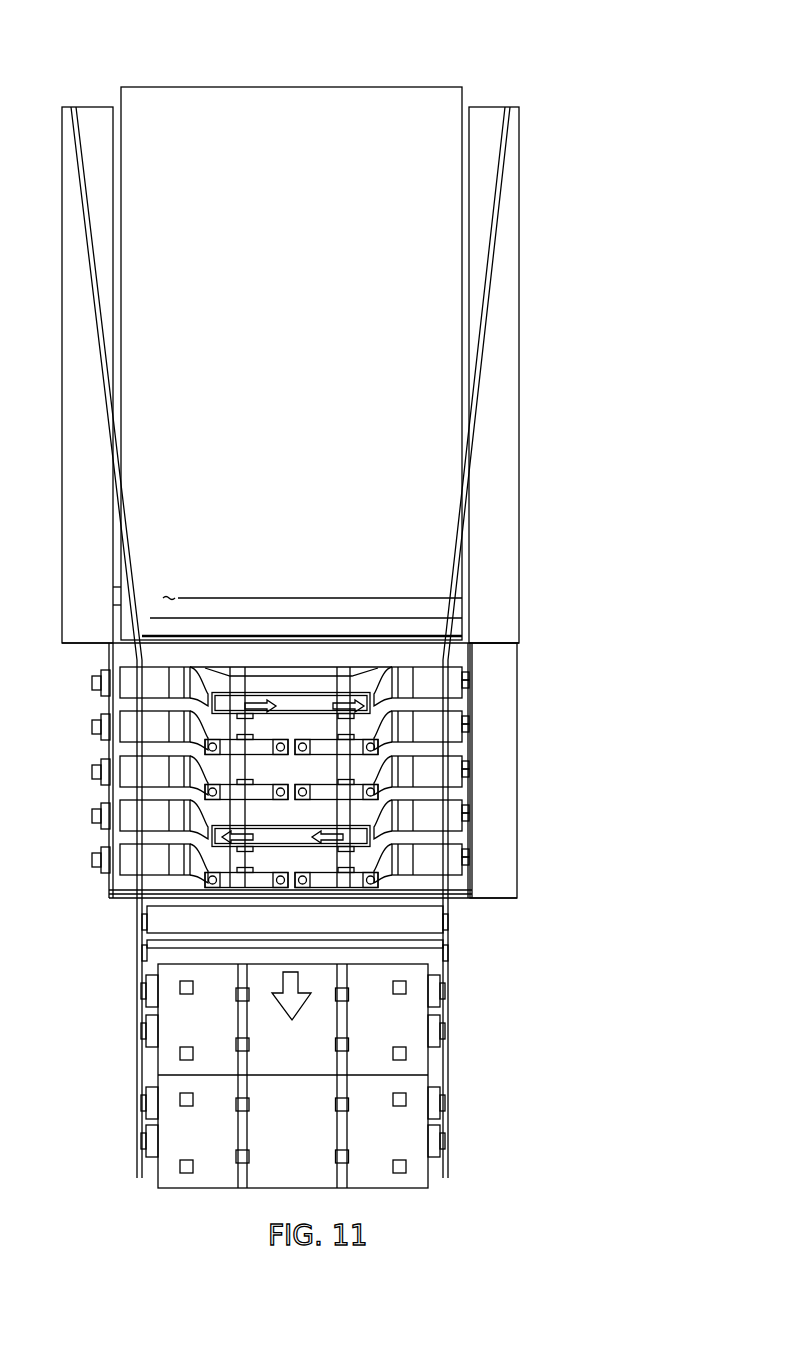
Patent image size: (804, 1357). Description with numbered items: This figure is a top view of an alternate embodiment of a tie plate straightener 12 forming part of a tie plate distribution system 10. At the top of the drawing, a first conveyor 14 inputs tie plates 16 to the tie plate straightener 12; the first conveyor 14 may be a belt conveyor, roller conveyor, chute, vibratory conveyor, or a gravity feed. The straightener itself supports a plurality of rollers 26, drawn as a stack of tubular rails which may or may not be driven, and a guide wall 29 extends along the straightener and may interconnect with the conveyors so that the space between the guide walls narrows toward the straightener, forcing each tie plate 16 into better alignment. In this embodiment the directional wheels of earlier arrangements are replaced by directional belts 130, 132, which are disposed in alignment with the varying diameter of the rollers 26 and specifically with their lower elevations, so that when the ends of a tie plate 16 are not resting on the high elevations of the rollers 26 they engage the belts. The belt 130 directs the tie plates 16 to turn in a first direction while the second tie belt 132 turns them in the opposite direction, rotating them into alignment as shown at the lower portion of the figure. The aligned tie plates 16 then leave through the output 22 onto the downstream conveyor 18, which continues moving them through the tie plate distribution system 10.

The tie plate distribution system 10 is at (349, 617).
The tie plate straightener 12 is at (538, 722).
The first conveyor 14 is at (388, 118).
The tie plates 16 is at (180, 1013).
The conveyor 18 is at (468, 1063).
The output 22 is at (467, 922).
The rollers 26 is at (82, 672).
The guide wall 29 is at (445, 745).
The directional belt 130 is at (333, 684).
The second tie belt 132 is at (351, 868).